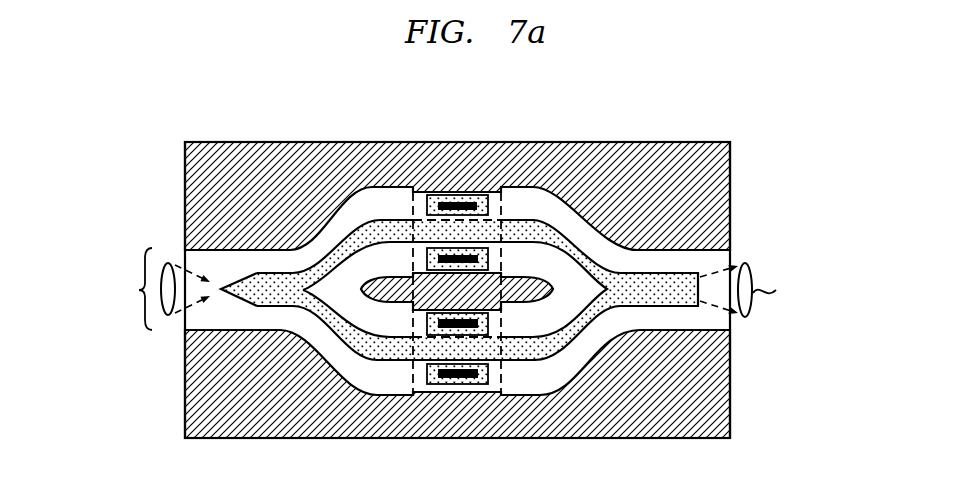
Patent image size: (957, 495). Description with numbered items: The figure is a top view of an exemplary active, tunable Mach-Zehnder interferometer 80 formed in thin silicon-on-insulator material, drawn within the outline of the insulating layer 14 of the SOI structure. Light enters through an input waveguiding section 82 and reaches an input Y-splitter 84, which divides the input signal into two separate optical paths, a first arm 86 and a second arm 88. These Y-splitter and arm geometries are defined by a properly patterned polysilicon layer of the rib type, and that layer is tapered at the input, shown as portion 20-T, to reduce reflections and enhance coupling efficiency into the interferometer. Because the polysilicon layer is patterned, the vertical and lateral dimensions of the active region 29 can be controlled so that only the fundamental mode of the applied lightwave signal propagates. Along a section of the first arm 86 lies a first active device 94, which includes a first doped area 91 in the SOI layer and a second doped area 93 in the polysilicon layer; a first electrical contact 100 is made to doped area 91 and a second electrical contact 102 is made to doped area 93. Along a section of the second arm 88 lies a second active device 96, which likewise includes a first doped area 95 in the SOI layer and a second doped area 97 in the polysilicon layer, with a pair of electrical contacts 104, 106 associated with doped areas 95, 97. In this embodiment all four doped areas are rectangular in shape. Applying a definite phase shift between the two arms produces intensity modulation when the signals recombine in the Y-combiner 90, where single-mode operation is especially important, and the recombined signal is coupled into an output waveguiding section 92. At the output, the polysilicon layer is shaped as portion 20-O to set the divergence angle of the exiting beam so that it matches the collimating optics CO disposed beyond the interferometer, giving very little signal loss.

The Mach-Zehnder interferometer 80 is at (765, 137).
The insulating layer 14 is at (194, 165).
The first active device 94 is at (493, 154).
The second active device 96 is at (395, 416).
The second arm 88 is at (588, 347).
The first arm 86 is at (348, 212).
The input Y-splitter 84 is at (293, 290).
The input waveguiding section 82 is at (257, 304).
The tapered input portion of polysilicon layer 20-T is at (243, 284).
The output portion of polysilicon layer 20-O is at (703, 305).
The active region 29 is at (162, 289).
The collimating optics CO is at (779, 290).
The Y-combiner 90 is at (623, 280).
The output waveguiding section 92 is at (703, 270).
The first doped area of first active device 91 is at (420, 257).
The second doped area of first active device 93 is at (501, 224).
The first electrical contact 100 is at (443, 253).
The second electrical contact 102 is at (459, 203).
The electrical contact 104 is at (457, 379).
The electrical contact 106 is at (480, 323).
The first doped area of second active device 95 is at (432, 381).
The second doped area of second active device 97 is at (473, 343).